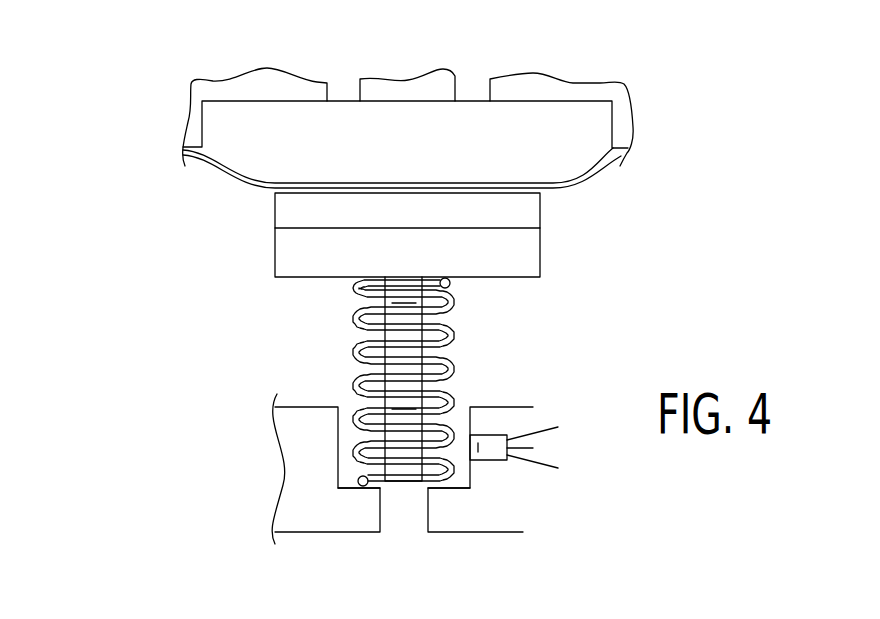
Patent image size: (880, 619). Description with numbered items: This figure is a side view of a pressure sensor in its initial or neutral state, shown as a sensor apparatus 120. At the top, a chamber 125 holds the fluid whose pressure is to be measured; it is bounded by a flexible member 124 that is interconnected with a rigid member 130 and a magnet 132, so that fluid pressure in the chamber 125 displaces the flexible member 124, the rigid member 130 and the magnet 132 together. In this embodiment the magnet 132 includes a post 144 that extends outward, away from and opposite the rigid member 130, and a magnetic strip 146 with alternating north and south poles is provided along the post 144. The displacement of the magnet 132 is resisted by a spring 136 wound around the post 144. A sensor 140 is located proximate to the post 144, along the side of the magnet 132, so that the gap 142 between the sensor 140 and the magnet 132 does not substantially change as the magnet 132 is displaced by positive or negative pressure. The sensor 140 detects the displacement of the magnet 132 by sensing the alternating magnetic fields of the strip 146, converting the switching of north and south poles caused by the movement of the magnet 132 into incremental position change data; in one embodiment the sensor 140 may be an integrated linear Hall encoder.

The sensor apparatus 120 is at (208, 55).
The flexible member 124 is at (600, 155).
The chamber 125 is at (563, 148).
The rigid member 130 is at (287, 213).
The magnet 132 is at (288, 253).
The spring 136 is at (455, 348).
The sensor 140 is at (493, 462).
The gap 142 is at (456, 466).
The post 144 is at (377, 436).
The magnetic strip 146 is at (412, 377).